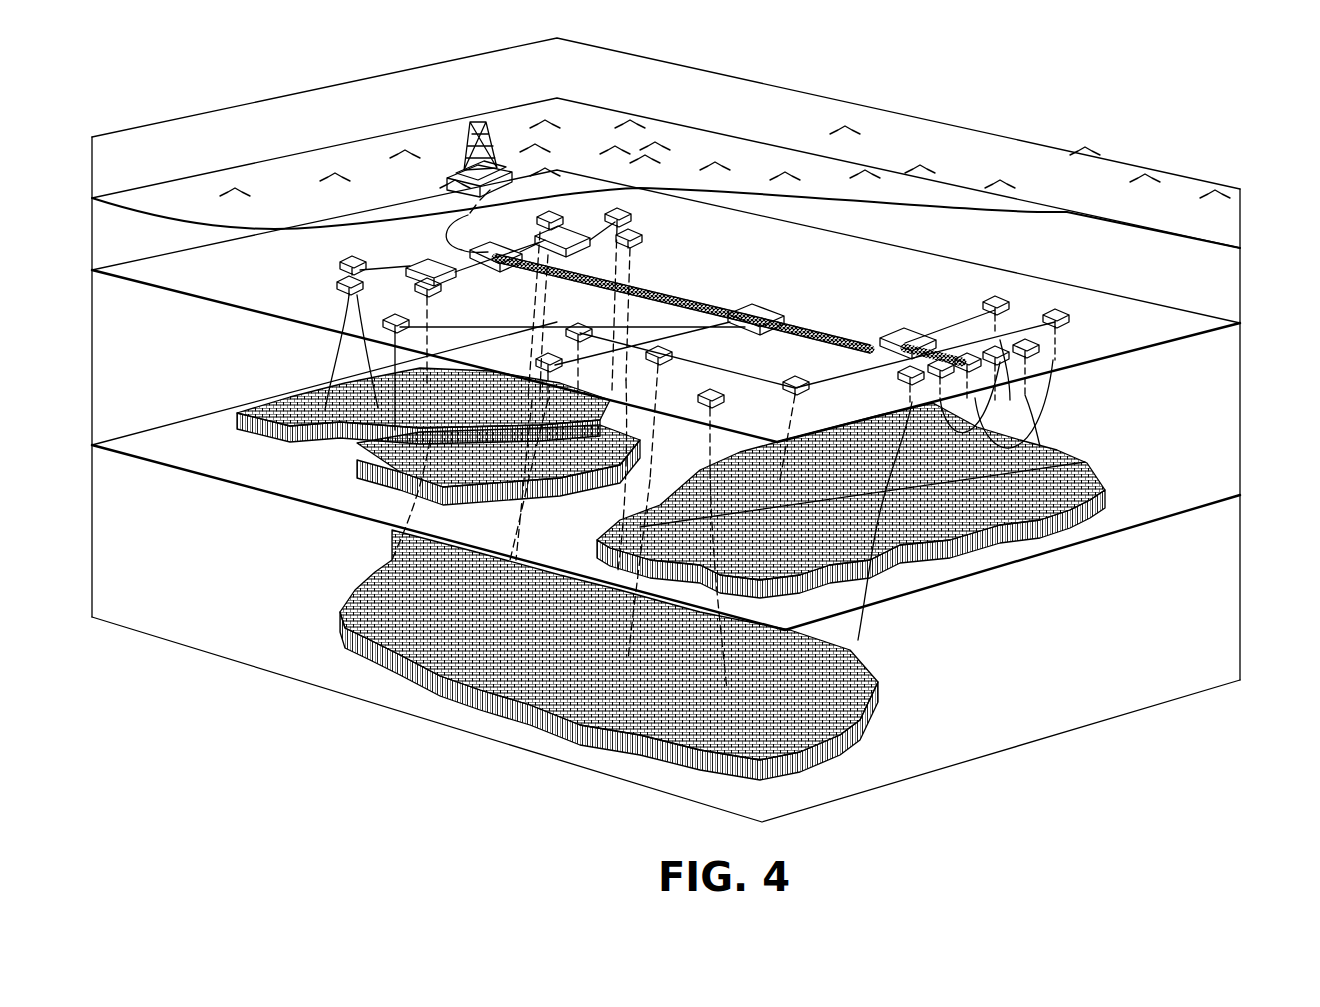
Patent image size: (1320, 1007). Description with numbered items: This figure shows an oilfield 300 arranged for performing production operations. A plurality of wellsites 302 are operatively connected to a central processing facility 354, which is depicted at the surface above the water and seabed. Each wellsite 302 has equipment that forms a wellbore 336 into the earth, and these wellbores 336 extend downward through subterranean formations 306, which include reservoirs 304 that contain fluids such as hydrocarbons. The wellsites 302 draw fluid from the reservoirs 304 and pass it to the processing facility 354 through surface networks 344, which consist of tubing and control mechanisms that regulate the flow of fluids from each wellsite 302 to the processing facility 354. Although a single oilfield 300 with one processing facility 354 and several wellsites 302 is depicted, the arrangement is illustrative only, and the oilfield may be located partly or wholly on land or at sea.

The oilfield 300 is at (140, 46).
The central processing facility 354 is at (462, 138).
The surface networks 344 is at (390, 285).
The wellsites 302 is at (802, 365).
The wellbore 336 is at (1042, 446).
The subterranean formations 306 is at (1262, 327).
The reservoirs 304 is at (947, 568).